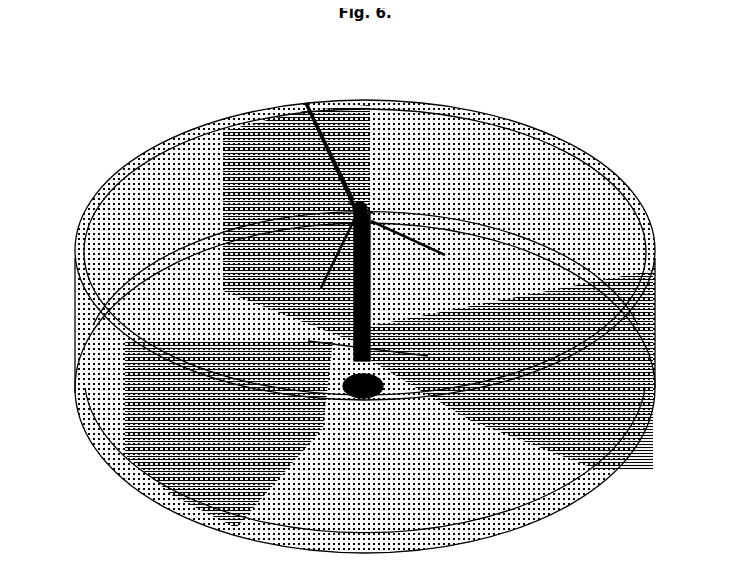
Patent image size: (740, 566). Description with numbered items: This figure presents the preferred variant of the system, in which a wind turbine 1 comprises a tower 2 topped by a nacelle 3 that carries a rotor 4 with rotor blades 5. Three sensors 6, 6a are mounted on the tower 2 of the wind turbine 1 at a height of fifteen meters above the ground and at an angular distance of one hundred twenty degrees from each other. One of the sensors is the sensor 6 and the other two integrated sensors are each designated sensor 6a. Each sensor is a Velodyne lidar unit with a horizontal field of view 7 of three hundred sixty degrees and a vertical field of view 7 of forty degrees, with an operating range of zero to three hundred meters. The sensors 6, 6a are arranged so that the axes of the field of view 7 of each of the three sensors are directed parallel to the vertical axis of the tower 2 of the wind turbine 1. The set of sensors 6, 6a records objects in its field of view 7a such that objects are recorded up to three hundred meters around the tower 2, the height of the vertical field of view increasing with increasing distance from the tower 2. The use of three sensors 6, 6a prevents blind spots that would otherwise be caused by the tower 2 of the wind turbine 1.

The wind turbine 1 is at (327, 113).
The tower 2 is at (363, 268).
The nacelle 3 is at (372, 190).
The rotor 4 is at (355, 157).
The rotor blades 5 is at (327, 143).
The sensor 6 is at (427, 420).
The sensor 6a is at (353, 335).
The field of view of sensor 6 7 is at (508, 418).
The field of view of sensor 6a 7a is at (365, 326).